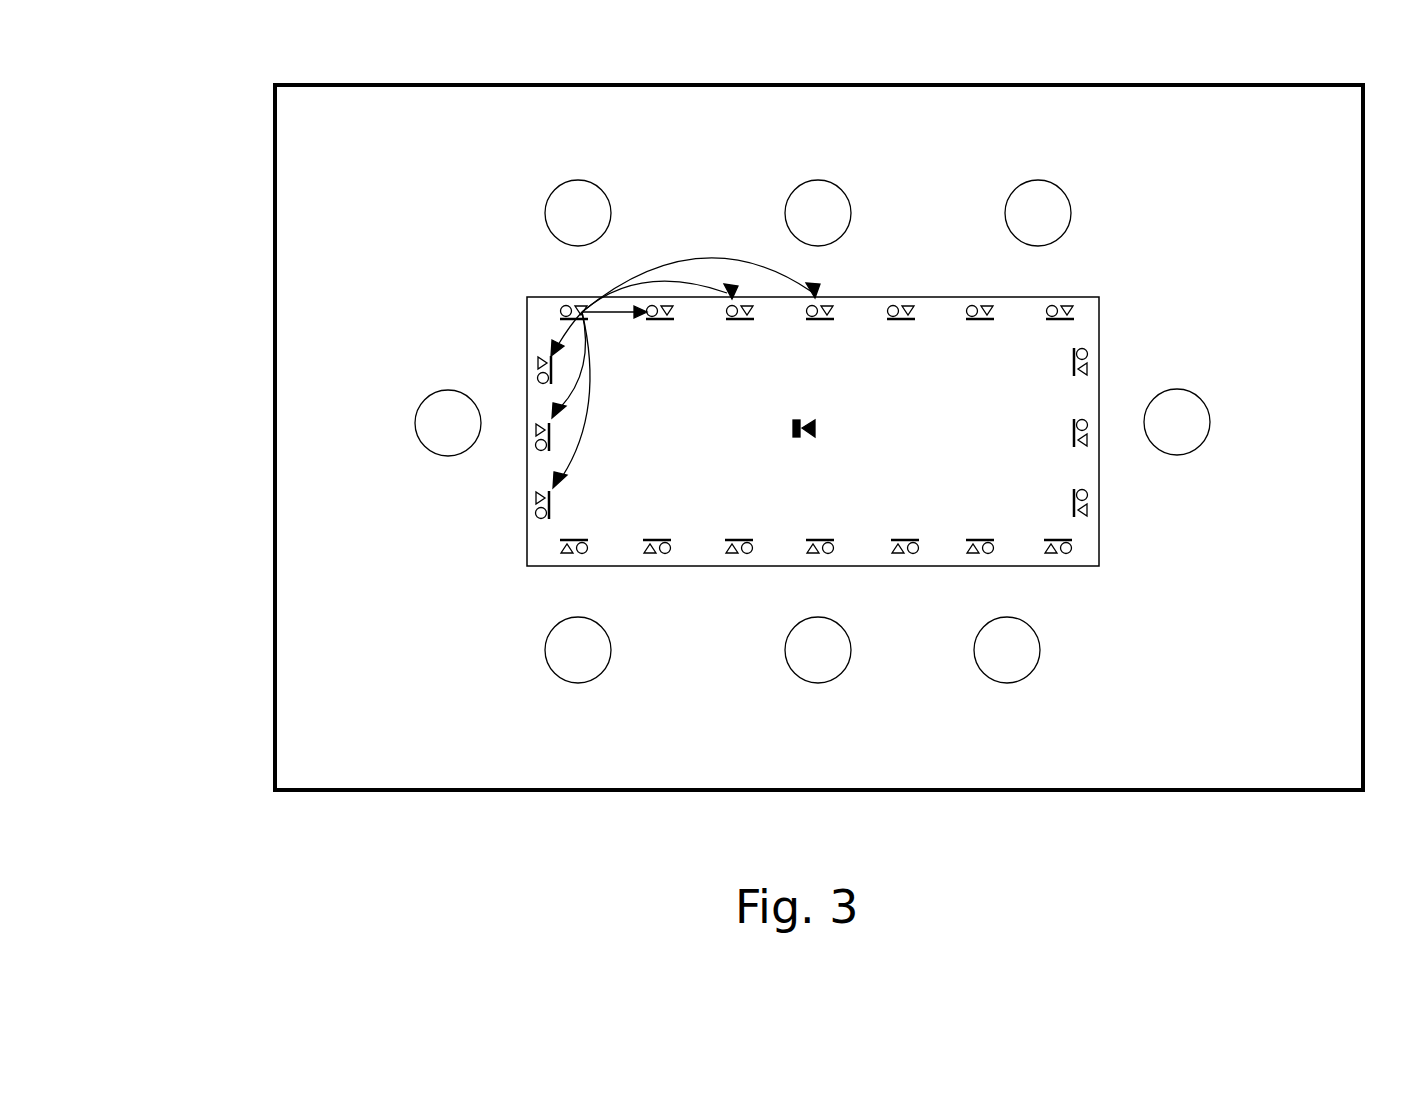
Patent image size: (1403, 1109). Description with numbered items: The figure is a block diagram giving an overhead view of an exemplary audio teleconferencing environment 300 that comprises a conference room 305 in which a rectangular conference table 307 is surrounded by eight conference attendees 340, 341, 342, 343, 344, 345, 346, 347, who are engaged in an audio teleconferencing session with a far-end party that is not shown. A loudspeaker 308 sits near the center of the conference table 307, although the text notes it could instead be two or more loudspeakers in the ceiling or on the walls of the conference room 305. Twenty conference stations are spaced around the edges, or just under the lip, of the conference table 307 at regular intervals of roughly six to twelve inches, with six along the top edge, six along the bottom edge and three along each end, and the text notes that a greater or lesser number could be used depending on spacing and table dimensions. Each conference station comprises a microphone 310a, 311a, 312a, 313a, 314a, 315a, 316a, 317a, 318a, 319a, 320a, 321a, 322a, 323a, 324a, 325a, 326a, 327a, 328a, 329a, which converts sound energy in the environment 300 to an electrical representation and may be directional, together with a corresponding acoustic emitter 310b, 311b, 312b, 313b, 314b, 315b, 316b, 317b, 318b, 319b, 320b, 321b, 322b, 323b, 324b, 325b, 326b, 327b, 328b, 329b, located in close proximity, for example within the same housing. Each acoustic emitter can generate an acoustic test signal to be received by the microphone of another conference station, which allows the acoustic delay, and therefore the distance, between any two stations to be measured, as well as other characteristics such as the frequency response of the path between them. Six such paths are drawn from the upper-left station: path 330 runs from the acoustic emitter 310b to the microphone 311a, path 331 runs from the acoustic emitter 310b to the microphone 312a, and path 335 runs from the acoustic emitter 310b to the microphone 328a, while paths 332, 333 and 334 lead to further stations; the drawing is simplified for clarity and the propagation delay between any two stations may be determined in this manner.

The audio teleconferencing environment 300 is at (230, 87).
The conference room 305 is at (262, 470).
The conference table 307 is at (527, 330).
The loudspeaker 308 is at (791, 428).
The microphone 310a is at (528, 282).
The acoustic emitter 310b is at (560, 305).
The microphone 311a is at (668, 351).
The acoustic emitter 311b is at (660, 326).
The microphone 312a is at (746, 351).
The acoustic emitter 312b is at (740, 326).
The microphone 313a is at (827, 351).
The acoustic emitter 313b is at (820, 326).
The microphone 314a is at (910, 351).
The acoustic emitter 314b is at (905, 326).
The microphone 315a is at (982, 351).
The acoustic emitter 315b is at (980, 326).
The microphone 316a is at (1099, 289).
The acoustic emitter 316b is at (1064, 305).
The microphone 317a is at (1124, 360).
The acoustic emitter 317b is at (1092, 361).
The microphone 318a is at (1046, 432).
The acoustic emitter 318b is at (1073, 427).
The microphone 319a is at (1126, 512).
The acoustic emitter 319b is at (1090, 498).
The microphone 320a is at (1103, 586).
The acoustic emitter 320b is at (1057, 568).
The microphone 321a is at (980, 509).
The acoustic emitter 321b is at (985, 538).
The microphone 322a is at (912, 509).
The acoustic emitter 322b is at (907, 538).
The microphone 323a is at (827, 509).
The acoustic emitter 323b is at (822, 538).
The microphone 324a is at (746, 509).
The acoustic emitter 324b is at (740, 538).
The microphone 325a is at (665, 509).
The acoustic emitter 325b is at (662, 538).
The microphone 326a is at (535, 581).
The acoustic emitter 326b is at (566, 566).
The microphone 327a is at (476, 529).
The acoustic emitter 327b is at (532, 507).
The microphone 328a is at (476, 470).
The acoustic emitter 328b is at (532, 440).
The microphone 329a is at (475, 361).
The acoustic emitter 329b is at (535, 370).
The path 330 is at (606, 302).
The path 331 is at (661, 282).
The path 332 is at (713, 258).
The path 333 is at (574, 352).
The path 334 is at (566, 400).
The path 335 is at (578, 455).
The conference attendee 340 is at (1177, 422).
The conference attendee 341 is at (1038, 213).
The conference attendee 342 is at (818, 213).
The conference attendee 343 is at (578, 213).
The conference attendee 344 is at (448, 423).
The conference attendee 345 is at (578, 650).
The conference attendee 346 is at (818, 650).
The conference attendee 347 is at (1007, 650).